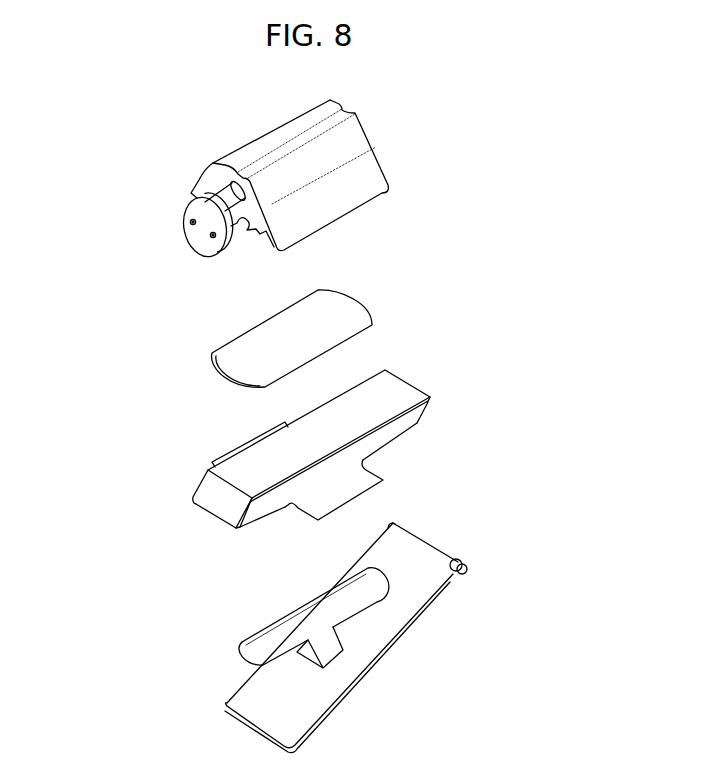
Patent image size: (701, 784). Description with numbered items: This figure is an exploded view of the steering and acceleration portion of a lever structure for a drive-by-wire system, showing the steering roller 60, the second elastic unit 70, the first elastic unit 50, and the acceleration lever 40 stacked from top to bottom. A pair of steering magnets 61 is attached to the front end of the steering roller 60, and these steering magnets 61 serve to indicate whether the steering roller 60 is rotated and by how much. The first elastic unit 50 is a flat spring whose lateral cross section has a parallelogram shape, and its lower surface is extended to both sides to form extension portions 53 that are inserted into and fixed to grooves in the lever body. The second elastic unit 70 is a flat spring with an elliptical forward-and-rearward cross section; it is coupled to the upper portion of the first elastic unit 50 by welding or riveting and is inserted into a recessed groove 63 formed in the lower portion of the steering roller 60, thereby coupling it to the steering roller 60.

The acceleration lever 40 is at (413, 558).
The first elastic unit 50 is at (392, 397).
The extension portions 53 is at (352, 482).
The steering roller 60 is at (344, 145).
The steering magnets 61 is at (192, 221).
The recessed groove 63 is at (245, 232).
The second elastic unit 70 is at (332, 318).